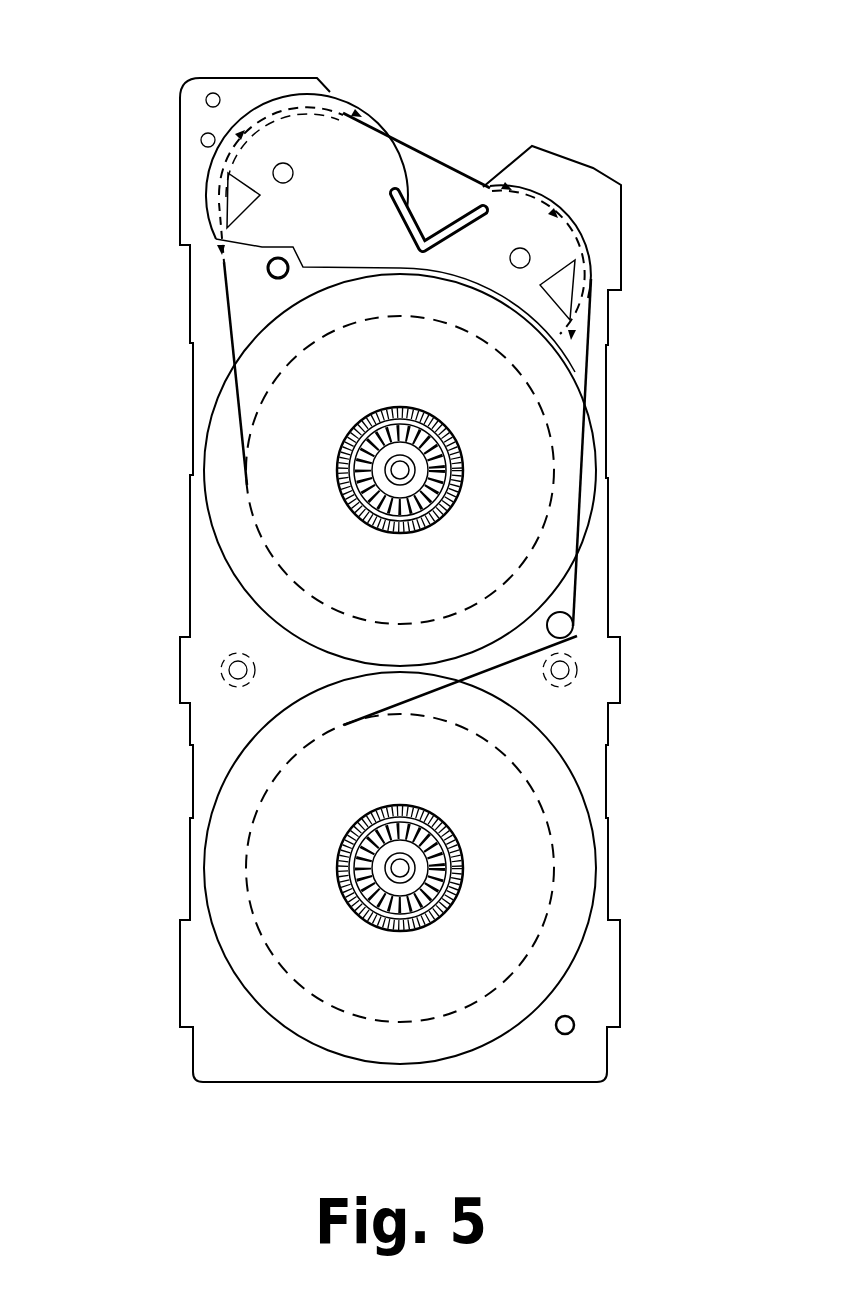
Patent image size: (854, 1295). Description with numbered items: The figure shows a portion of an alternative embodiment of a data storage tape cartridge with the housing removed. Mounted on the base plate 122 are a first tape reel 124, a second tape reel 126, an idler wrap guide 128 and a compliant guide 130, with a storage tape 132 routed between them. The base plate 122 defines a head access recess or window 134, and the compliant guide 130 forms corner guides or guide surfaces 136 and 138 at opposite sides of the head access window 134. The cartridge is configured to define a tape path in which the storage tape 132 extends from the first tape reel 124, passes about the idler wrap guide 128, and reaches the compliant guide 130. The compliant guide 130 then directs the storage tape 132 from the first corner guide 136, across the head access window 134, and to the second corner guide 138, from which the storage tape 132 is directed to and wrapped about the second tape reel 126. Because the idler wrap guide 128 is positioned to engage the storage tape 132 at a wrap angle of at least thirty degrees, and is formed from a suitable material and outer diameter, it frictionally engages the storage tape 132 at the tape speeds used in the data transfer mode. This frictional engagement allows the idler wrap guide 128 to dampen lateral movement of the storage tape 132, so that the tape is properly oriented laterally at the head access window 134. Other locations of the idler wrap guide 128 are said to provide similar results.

The base plate 122 is at (613, 981).
The first tape reel 124 is at (413, 1047).
The second tape reel 126 is at (218, 512).
The idler wrap guide 128 is at (574, 637).
The compliant guide 130 is at (307, 163).
The storage tape 132 is at (578, 588).
The head access window 134 is at (388, 178).
The first corner guide 136 is at (582, 235).
The second corner guide 138 is at (330, 108).